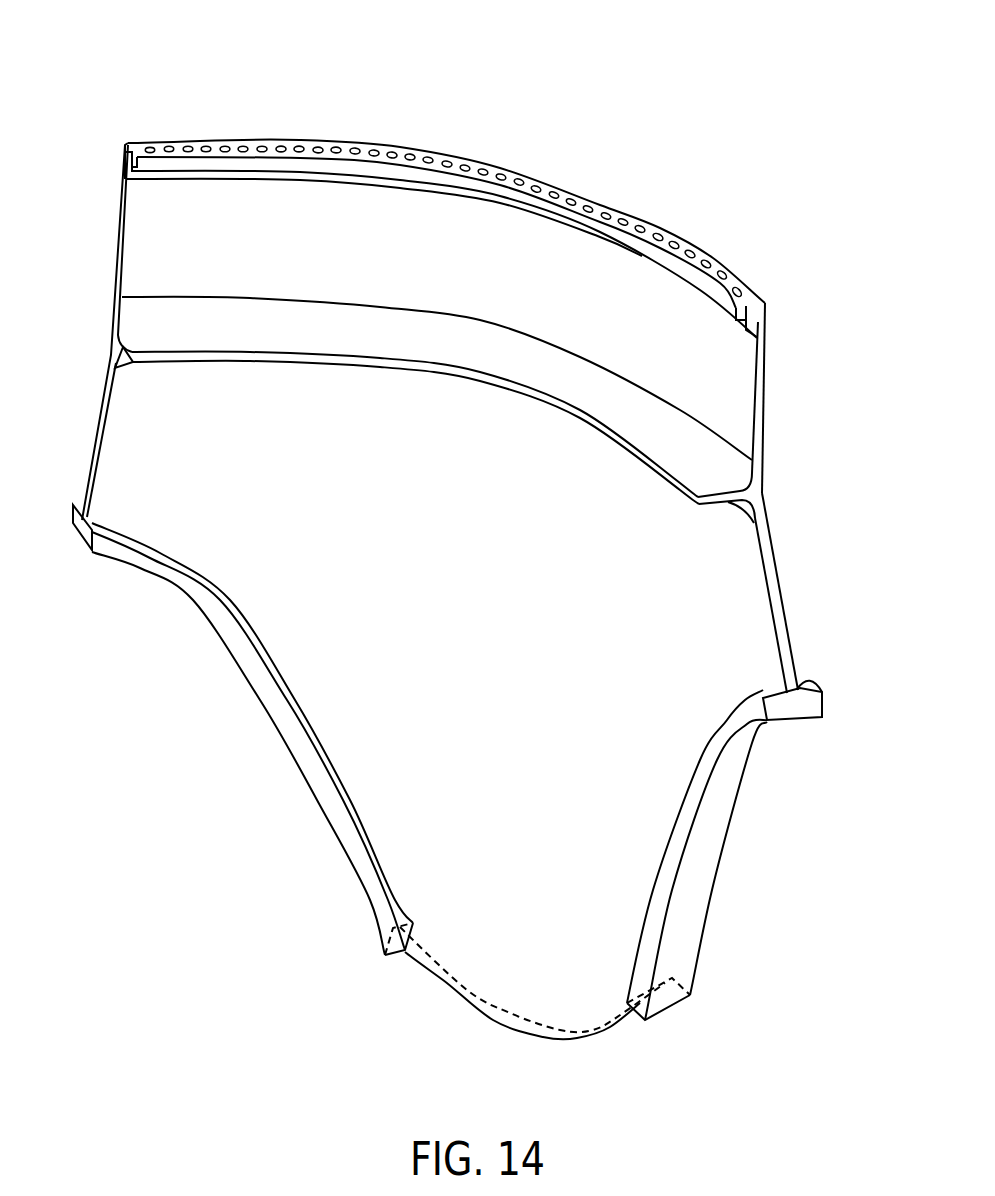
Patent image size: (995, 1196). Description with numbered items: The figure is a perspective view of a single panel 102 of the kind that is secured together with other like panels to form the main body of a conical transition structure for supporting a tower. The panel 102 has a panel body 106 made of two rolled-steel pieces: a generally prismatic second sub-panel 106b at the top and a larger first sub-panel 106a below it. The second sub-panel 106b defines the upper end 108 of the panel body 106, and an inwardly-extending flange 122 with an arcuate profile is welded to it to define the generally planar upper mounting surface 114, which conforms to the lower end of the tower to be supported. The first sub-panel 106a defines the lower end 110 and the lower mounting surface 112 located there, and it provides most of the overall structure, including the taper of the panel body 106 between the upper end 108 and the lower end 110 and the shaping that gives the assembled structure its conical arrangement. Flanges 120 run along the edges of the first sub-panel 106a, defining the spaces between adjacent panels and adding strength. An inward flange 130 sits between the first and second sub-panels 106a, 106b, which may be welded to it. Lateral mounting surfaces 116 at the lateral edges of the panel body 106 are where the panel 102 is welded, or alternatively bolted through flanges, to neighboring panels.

The panel 102 is at (206, 86).
The flange 122 is at (143, 132).
The upper mounting surface 114 is at (690, 247).
The panel body 106 is at (429, 570).
The second sub-panel 106b is at (472, 238).
The first sub-panel 106a is at (300, 650).
The upper end 108 is at (740, 351).
The lateral mounting surfaces 116 is at (121, 256).
The flange 130 is at (746, 492).
The flanges 120 is at (117, 560).
The lower end 110 is at (448, 930).
The lower mounting surface 112 is at (463, 990).